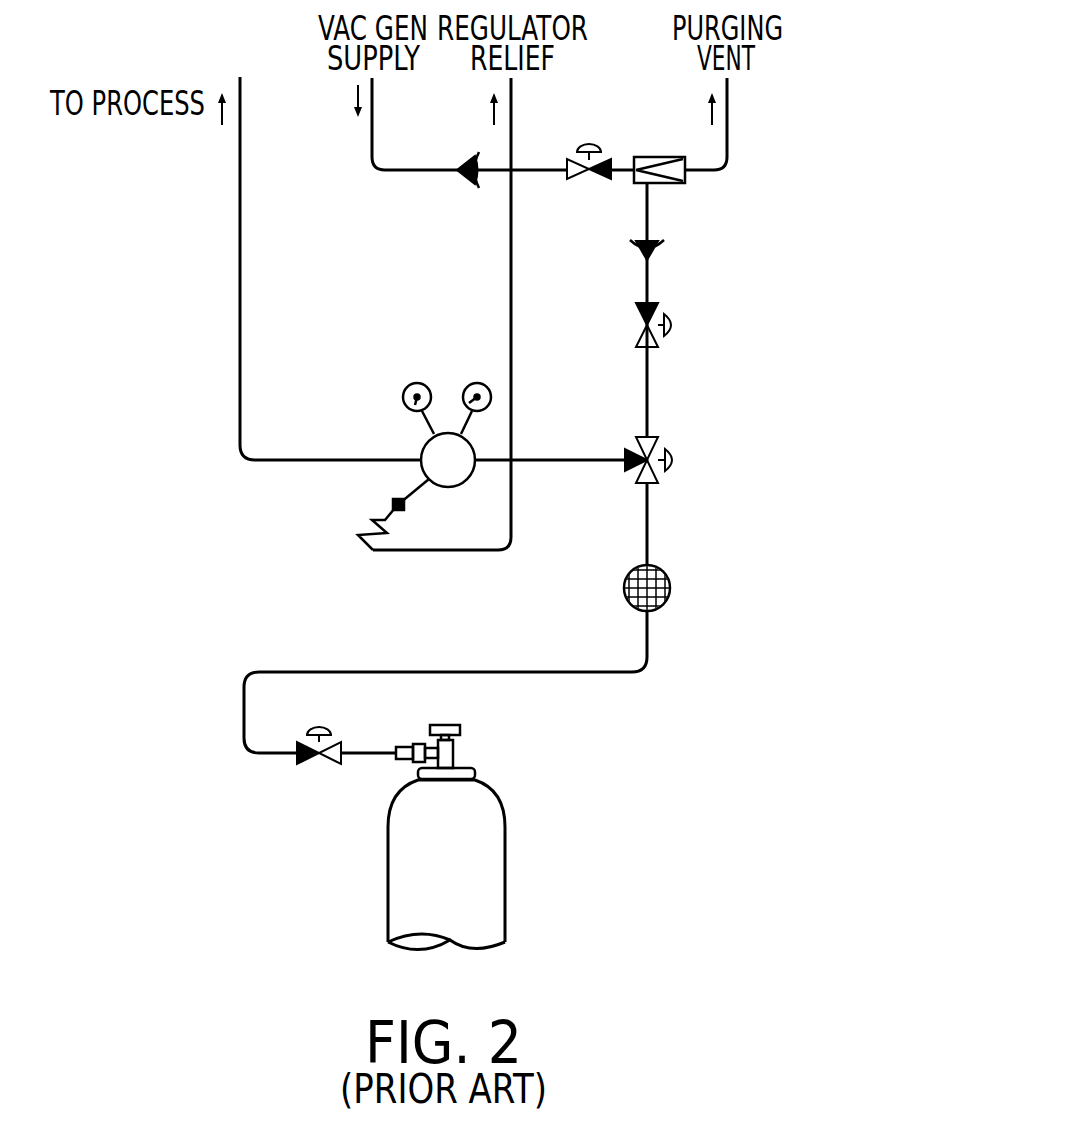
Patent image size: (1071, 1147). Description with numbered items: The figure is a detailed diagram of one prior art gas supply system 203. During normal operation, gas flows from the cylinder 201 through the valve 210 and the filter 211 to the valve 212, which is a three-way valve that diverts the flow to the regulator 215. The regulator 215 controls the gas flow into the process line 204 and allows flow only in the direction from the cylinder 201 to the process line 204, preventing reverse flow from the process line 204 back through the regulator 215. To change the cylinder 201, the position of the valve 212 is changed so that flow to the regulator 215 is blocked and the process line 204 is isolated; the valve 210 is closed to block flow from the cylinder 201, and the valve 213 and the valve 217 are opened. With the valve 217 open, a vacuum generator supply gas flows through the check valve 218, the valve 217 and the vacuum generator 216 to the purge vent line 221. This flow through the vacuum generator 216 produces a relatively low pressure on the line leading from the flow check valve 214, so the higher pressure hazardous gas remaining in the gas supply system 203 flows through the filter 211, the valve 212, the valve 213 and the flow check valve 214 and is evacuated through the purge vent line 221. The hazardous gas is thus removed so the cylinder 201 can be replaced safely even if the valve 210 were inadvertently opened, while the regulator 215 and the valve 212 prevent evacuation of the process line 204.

The cylinder 201 is at (505, 865).
The gas supply system 203 is at (845, 342).
The process line 204 is at (240, 265).
The valve 210 is at (319, 730).
The filter 211 is at (665, 572).
The three-way valve 212 is at (674, 451).
The valve 213 is at (672, 316).
The flow check valve 214 is at (657, 252).
The regulator 215 is at (362, 486).
The vacuum generator 216 is at (690, 188).
The valve 217 is at (589, 145).
The check valve 218 is at (467, 177).
The purge vent line 221 is at (727, 144).